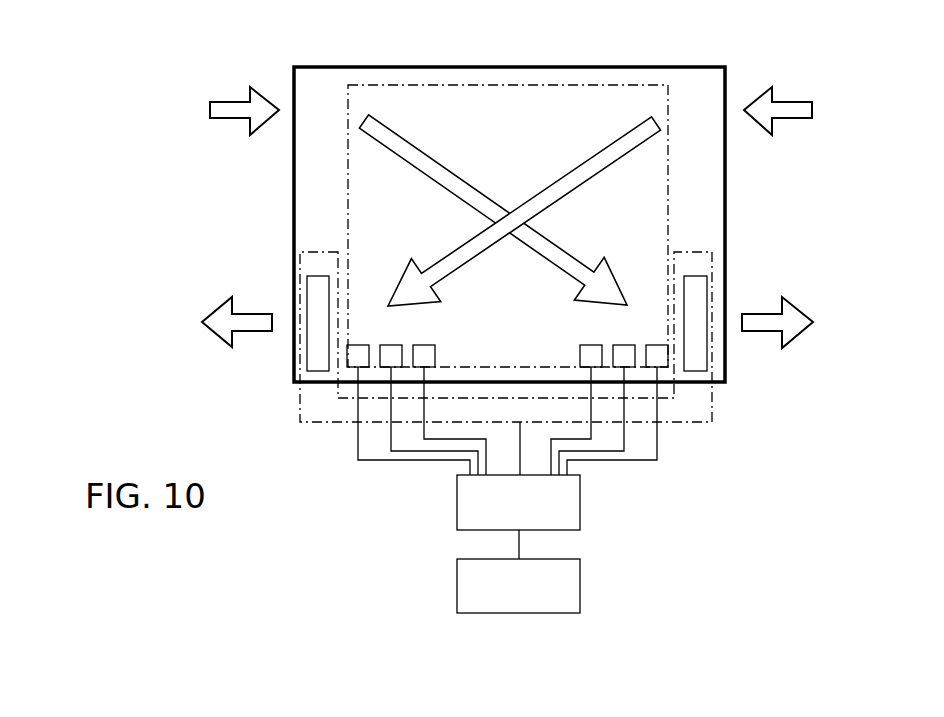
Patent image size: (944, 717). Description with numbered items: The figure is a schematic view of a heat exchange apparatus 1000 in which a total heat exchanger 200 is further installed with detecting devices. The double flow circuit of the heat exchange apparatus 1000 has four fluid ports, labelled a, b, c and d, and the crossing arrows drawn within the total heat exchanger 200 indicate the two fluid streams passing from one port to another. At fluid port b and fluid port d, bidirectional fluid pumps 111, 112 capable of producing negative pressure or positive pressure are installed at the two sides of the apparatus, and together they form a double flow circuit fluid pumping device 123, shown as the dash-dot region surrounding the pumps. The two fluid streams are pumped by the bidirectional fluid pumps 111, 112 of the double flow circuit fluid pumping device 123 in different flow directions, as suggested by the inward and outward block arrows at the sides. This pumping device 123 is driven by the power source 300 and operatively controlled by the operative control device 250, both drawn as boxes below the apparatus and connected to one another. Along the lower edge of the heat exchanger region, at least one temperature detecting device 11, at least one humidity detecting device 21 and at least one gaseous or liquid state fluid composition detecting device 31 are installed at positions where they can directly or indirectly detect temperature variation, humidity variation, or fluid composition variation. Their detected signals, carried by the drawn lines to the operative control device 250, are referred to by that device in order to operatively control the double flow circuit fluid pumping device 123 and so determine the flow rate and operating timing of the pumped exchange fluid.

The heat exchange apparatus 1000 is at (523, 67).
The total heat exchanger 200 is at (573, 87).
The bidirectional fluid pump capable of producing negative pressure or positive pres 111 is at (317, 276).
The bidirectional fluid pump capable of producing negative pressure or positive pres 112 is at (695, 276).
The double flow circuit fluid pumping device 123 is at (302, 402).
The temperature detecting device 11 is at (347, 360).
The humidity detecting device 21 is at (387, 362).
The gaseous or liquid state fluid composition detecting device 31 is at (434, 360).
The operative control device 250 is at (570, 532).
The power source 300 is at (457, 598).